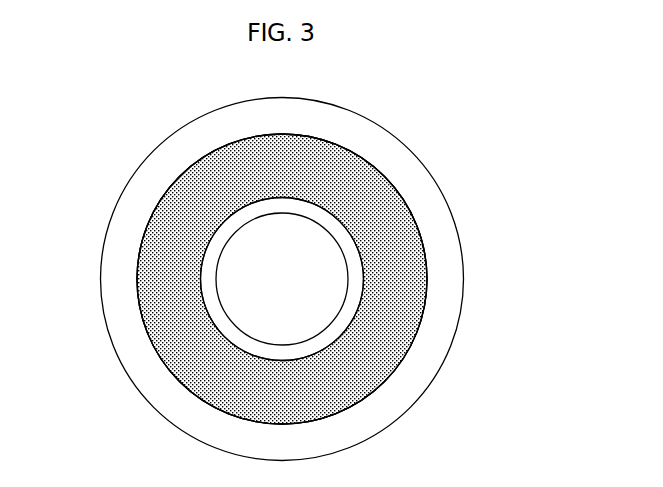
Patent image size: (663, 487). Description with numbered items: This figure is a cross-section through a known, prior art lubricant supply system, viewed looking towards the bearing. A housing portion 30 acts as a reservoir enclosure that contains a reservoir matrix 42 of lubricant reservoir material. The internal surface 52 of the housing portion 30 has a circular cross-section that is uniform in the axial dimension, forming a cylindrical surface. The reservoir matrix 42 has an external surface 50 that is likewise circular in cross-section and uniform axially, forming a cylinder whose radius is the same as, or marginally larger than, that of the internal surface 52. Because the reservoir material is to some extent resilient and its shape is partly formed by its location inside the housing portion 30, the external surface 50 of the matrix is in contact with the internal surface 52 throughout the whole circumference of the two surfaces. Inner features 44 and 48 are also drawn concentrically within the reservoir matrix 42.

The housing portion 30 is at (443, 242).
The reservoir matrix 42 is at (402, 303).
The inner liner 44 is at (335, 333).
The central bore 48 is at (282, 279).
The external surface 50 is at (167, 192).
The internal surface 52 is at (153, 226).